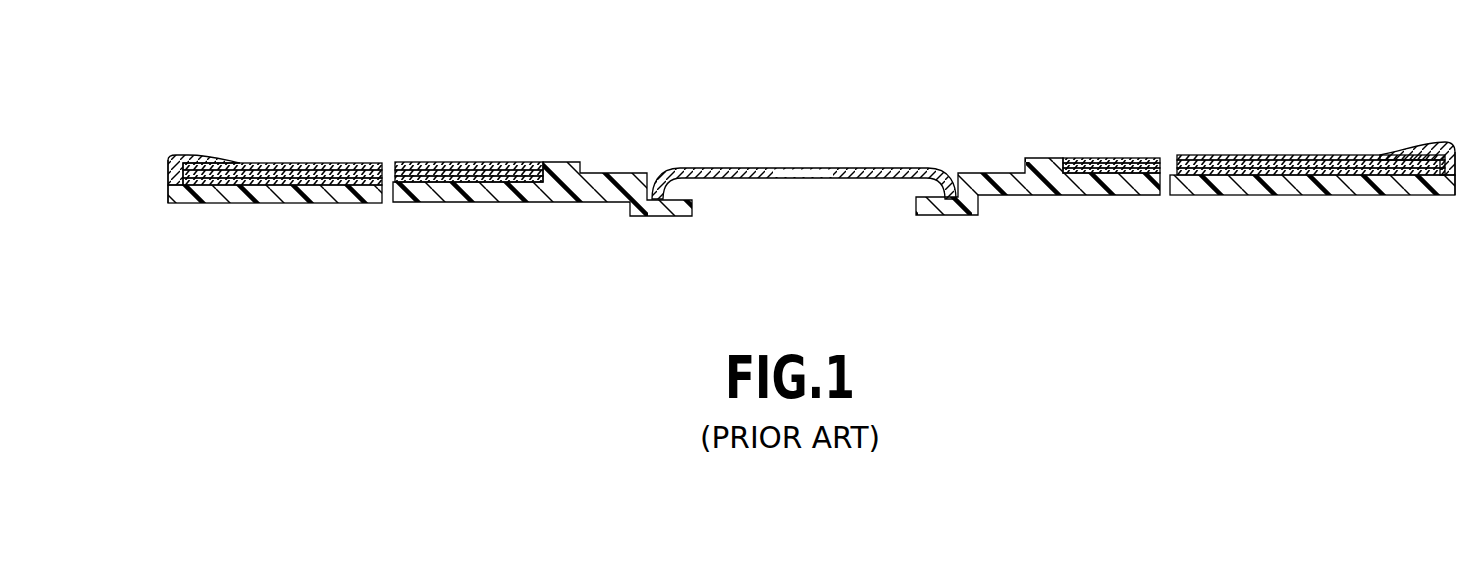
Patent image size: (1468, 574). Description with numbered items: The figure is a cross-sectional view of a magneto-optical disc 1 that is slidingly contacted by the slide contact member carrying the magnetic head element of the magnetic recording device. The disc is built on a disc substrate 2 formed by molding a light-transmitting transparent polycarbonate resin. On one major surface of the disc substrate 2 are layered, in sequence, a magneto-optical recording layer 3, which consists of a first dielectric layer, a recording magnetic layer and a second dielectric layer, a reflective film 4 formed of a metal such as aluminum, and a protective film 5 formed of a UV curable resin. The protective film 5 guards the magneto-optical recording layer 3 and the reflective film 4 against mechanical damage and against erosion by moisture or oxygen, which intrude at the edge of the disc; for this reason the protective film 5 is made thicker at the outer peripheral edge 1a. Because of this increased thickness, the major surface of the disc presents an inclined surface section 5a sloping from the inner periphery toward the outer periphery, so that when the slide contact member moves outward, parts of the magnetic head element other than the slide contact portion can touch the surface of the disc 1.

The magneto-optical disc 1 is at (815, 142).
The outer peripheral edge 1a is at (176, 201).
The disc substrate 2 is at (1338, 184).
The magneto-optical recording layer 3 is at (1288, 173).
The reflective film 4 is at (1240, 163).
The protective film 5 is at (811, 129).
The inclined surface section 5a is at (195, 158).